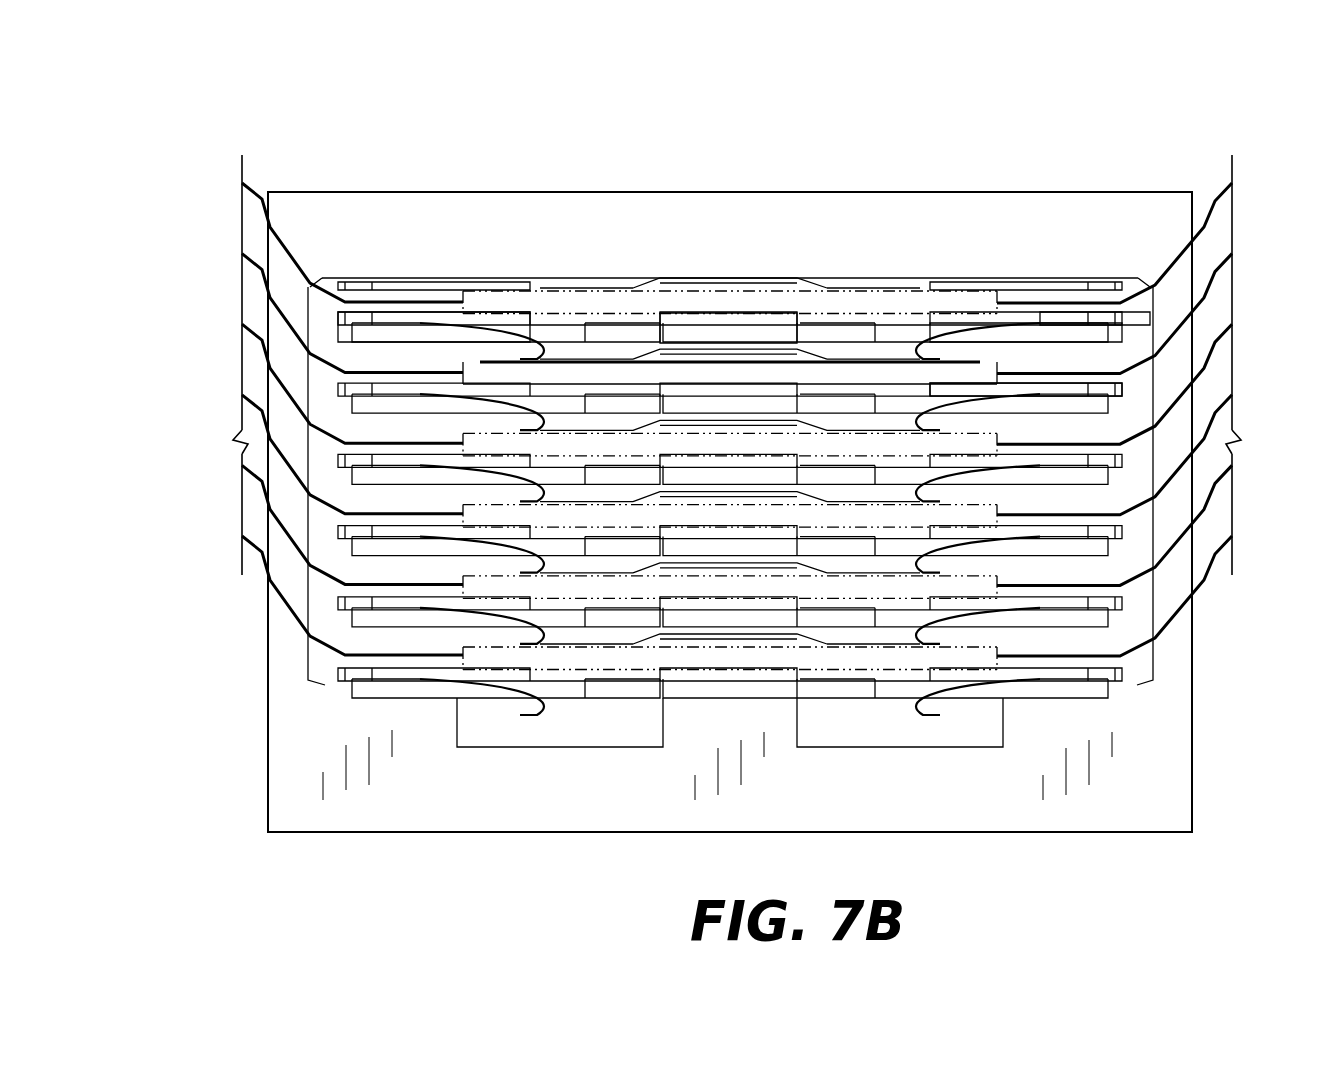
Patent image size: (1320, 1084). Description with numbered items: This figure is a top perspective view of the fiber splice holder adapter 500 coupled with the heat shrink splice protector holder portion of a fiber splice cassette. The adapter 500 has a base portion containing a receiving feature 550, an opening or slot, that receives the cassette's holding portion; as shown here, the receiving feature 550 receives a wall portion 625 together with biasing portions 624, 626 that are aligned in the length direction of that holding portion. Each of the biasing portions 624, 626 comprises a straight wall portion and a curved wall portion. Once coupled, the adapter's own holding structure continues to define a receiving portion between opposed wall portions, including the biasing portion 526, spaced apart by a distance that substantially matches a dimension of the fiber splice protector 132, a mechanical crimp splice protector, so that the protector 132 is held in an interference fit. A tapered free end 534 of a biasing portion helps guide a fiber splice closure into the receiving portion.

The fiber splice holder adapter 500 is at (315, 662).
The biasing portion 624 is at (400, 333).
The fiber splice protector 132 is at (568, 368).
The wall portion 625 is at (735, 330).
The receiving feature 550 is at (890, 325).
The free end 534 is at (1035, 355).
The biasing portion 626 is at (1070, 332).
The biasing portion 526 is at (1070, 392).